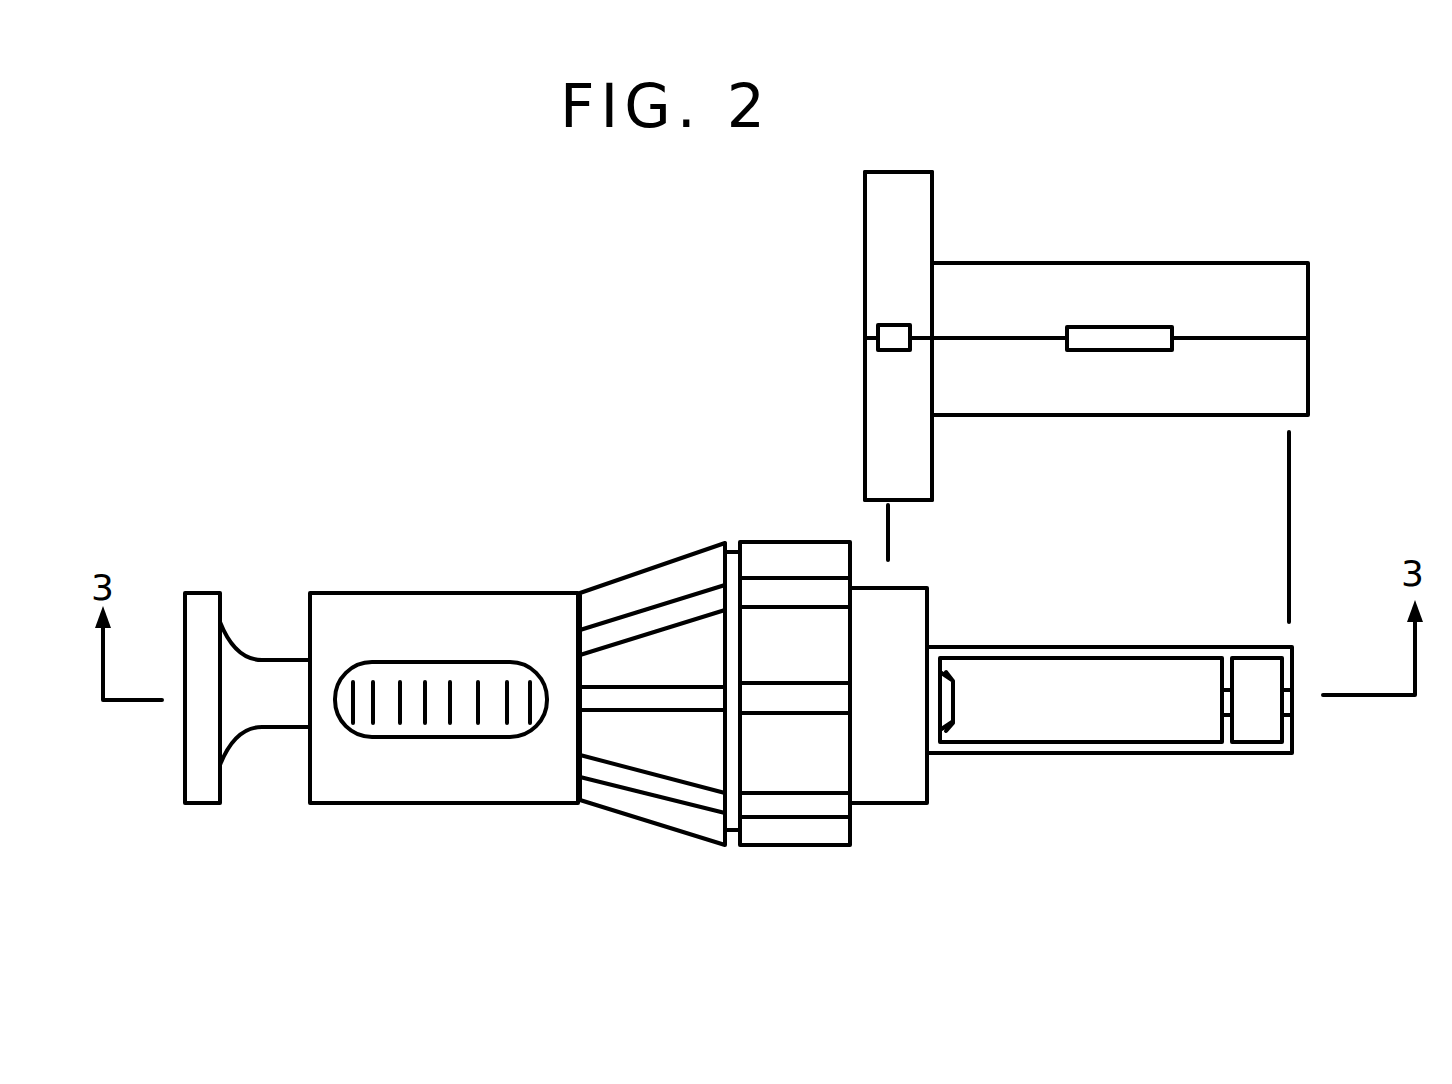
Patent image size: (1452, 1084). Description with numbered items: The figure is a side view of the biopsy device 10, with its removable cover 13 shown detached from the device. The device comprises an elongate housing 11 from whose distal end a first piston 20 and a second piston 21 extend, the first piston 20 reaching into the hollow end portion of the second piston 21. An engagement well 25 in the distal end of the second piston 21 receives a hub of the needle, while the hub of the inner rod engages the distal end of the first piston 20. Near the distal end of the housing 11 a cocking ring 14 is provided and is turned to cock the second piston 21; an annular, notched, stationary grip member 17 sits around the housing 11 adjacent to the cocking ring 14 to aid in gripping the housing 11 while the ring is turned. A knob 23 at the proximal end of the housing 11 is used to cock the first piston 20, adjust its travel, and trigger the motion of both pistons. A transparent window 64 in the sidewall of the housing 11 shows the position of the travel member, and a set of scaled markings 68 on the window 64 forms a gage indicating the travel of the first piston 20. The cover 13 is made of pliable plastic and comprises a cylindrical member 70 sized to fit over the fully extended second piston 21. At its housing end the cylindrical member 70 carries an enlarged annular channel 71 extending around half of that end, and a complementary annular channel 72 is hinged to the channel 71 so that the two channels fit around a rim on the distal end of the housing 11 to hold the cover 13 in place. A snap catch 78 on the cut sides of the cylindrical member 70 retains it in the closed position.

The biopsy device 10 is at (520, 872).
The elongate housing 11 is at (490, 623).
The removable cover 13 is at (1230, 235).
The cocking ring 14 is at (800, 620).
The stationary grip member 17 is at (662, 652).
The first piston 20 is at (933, 675).
The second piston 21 is at (1075, 753).
The knob 23 is at (207, 687).
The engagement well 25 is at (1258, 712).
The transparent window 64 is at (390, 660).
The scaled markings 68 is at (447, 697).
The cylindrical member 70 is at (1055, 298).
The annular channel 71 is at (905, 462).
The complementary annular channel 72 is at (915, 217).
The snap catch 78 is at (1120, 335).